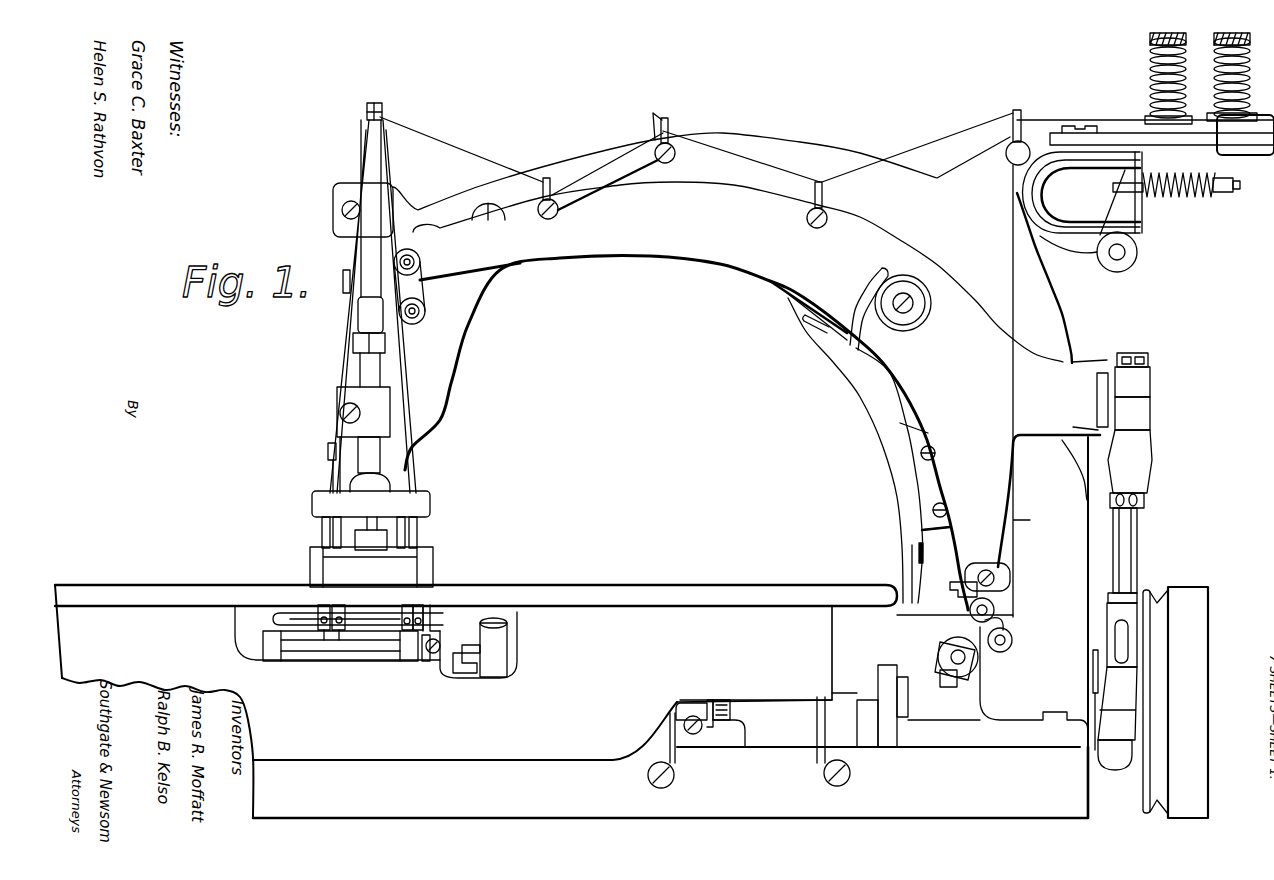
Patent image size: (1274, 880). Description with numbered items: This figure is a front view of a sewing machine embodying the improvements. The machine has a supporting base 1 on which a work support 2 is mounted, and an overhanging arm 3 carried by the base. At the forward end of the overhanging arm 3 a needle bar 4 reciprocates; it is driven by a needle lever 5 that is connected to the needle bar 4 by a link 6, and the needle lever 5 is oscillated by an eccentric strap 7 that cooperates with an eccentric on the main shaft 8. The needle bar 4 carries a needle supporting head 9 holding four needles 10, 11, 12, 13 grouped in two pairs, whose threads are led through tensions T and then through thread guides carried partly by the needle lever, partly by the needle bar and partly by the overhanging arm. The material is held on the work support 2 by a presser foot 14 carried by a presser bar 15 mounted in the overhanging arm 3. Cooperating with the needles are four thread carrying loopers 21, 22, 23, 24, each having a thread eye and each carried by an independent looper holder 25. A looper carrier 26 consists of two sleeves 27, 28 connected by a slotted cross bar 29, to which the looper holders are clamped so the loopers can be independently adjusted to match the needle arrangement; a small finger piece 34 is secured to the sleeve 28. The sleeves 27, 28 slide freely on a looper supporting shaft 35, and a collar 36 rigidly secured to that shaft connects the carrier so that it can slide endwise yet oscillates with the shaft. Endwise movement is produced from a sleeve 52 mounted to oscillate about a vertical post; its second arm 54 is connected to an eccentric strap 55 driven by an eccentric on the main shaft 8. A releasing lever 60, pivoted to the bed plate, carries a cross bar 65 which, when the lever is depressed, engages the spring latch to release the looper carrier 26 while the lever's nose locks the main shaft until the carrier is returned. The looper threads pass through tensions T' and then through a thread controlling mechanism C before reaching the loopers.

The supporting base 1 is at (718, 795).
The work support 2 is at (657, 592).
The overhanging arm 3 is at (775, 152).
The needle bar 4 is at (372, 368).
The needle lever 5 is at (697, 258).
The link 6 is at (440, 293).
The eccentric strap 7 is at (1128, 545).
The main shaft 8 is at (847, 700).
The needle supporting head 9 is at (382, 504).
The needle 10 is at (326, 541).
The needle 11 is at (336, 545).
The needle 12 is at (405, 526).
The needle 13 is at (417, 541).
The presser foot 14 is at (405, 569).
The presser bar 15 is at (363, 523).
The looper 21 is at (324, 606).
The looper 22 is at (341, 606).
The looper 23 is at (410, 606).
The looper 24 is at (424, 608).
The looper holder 25 is at (339, 640).
The looper carrier 26 is at (290, 612).
The sleeve 27 is at (274, 640).
The sleeve 28 is at (435, 654).
The slotted cross bar 29 is at (372, 659).
The finger piece 34 is at (489, 648).
The looper supporting shaft 35 is at (296, 648).
The collar 36 is at (408, 660).
The sleeve 52 is at (792, 728).
The second arm 54 is at (742, 710).
The eccentric strap 55 is at (693, 710).
The releasing lever 60 is at (497, 625).
The cross bar 65 is at (472, 668).
The thread controlling mechanism C is at (1002, 624).
The tensions T is at (1239, 77).
The tensions T' is at (1145, 78).